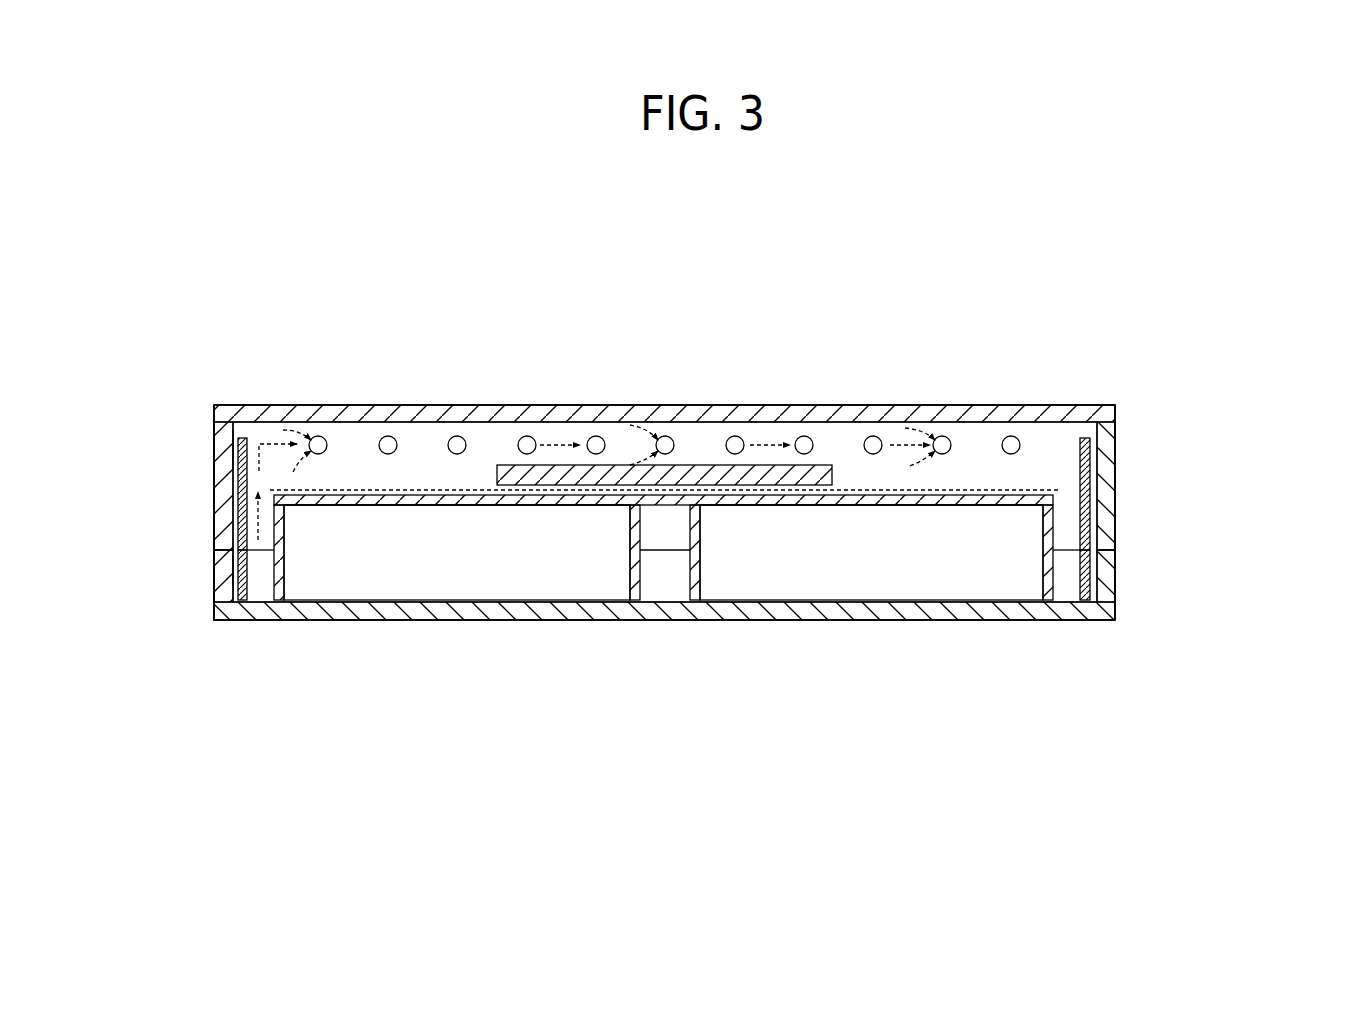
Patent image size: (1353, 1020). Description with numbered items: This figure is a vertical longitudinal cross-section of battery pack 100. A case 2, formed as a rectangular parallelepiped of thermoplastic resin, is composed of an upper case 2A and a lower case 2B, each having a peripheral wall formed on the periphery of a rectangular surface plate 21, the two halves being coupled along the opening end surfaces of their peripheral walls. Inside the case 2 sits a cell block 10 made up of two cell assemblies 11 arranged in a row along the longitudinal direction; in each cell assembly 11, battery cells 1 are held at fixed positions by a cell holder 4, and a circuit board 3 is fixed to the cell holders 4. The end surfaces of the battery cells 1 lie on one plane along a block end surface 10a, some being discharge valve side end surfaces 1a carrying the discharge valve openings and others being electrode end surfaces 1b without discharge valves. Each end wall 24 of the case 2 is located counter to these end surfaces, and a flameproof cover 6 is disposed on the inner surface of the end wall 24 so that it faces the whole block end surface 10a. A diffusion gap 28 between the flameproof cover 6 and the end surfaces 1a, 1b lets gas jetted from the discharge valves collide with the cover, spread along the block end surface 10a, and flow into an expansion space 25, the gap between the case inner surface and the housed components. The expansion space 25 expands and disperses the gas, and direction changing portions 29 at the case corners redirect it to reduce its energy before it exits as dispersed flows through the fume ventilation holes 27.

The battery pack 100 is at (1118, 280).
The case 2 is at (767, 512).
The upper case 2A is at (1147, 457).
The lower case 2B is at (741, 585).
The surface plate 21 is at (543, 410).
The flameproof cover 6 is at (213, 483).
The end wall 24 is at (222, 453).
The direction changing portion 29 is at (255, 435).
The diffusion gap 28 is at (258, 589).
The fume ventilation hole 27 is at (388, 436).
The expansion space 25 is at (690, 437).
The circuit board 3 is at (622, 470).
The cell block 10 is at (965, 490).
The block end surface 10a is at (268, 518).
The battery cell 1 is at (517, 565).
The cell holder 4 is at (405, 506).
The cell assembly 11 is at (540, 717).
The discharge valve side end surface 1a is at (266, 575).
The electrode end surface 1b is at (1064, 562).